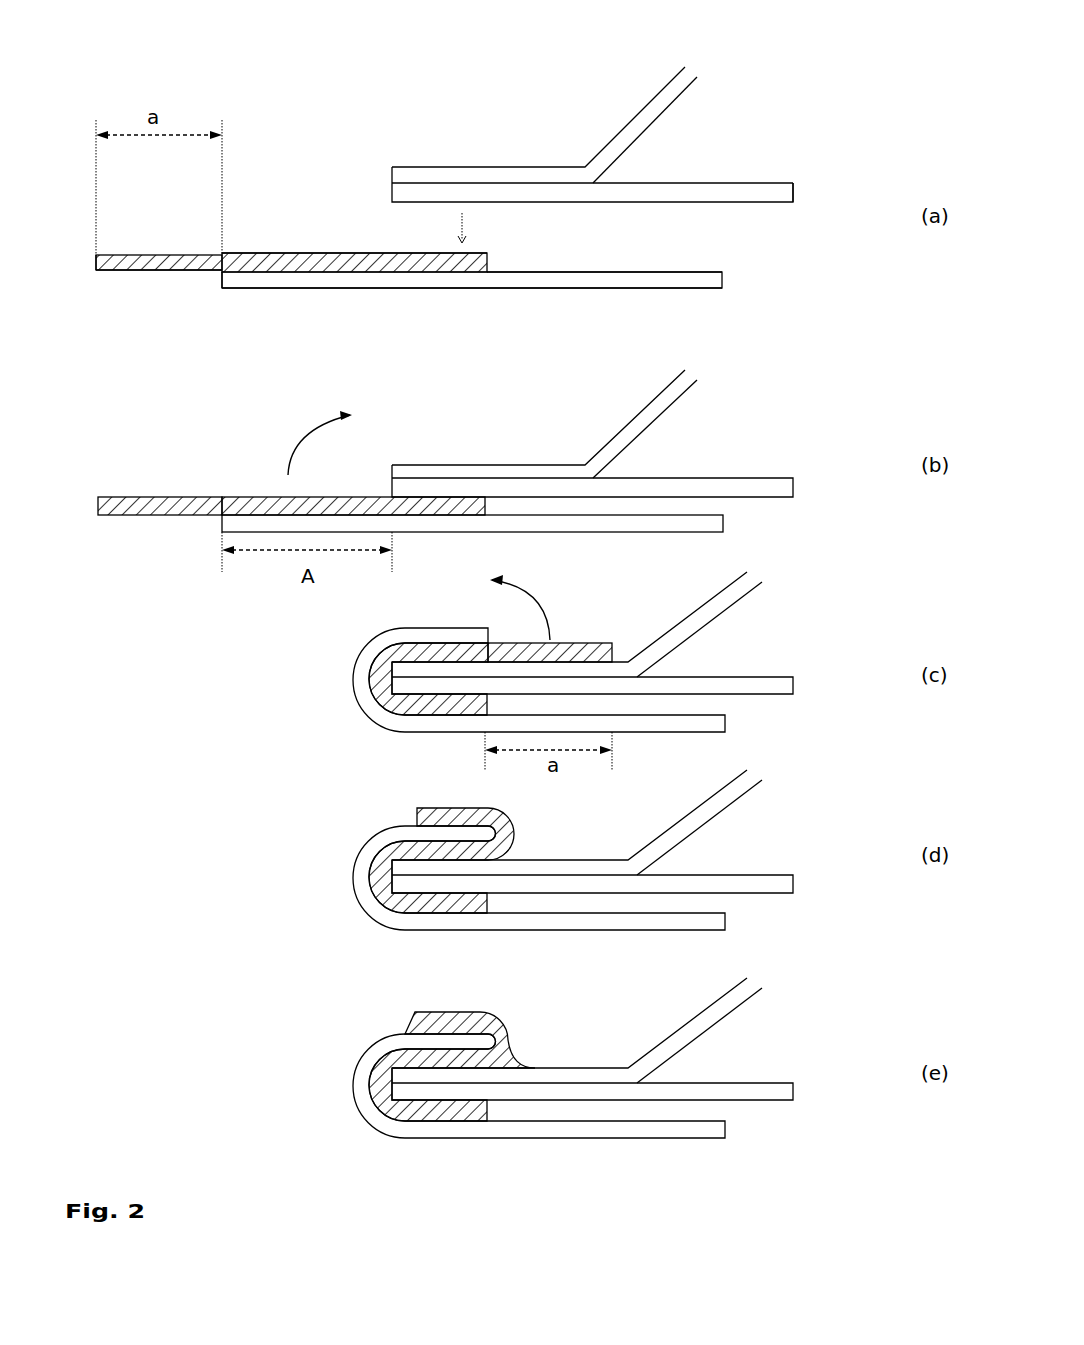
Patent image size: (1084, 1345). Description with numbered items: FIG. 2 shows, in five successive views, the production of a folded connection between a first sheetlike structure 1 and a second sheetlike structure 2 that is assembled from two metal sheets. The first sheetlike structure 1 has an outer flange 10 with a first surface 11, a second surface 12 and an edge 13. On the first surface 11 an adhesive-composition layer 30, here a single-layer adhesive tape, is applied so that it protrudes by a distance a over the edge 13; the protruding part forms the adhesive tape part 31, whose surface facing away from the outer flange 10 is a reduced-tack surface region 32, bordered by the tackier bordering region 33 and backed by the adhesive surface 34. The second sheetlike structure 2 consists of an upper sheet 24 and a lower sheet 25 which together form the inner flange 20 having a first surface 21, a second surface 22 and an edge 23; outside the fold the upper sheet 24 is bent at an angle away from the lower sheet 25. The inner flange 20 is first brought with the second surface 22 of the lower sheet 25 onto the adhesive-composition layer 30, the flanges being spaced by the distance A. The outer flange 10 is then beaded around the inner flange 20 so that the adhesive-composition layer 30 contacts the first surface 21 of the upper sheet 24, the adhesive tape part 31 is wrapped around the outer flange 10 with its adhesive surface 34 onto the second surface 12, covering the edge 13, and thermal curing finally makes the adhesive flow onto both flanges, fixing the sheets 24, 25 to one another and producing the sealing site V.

The first sheetlike structure 1 is at (437, 254).
The second sheetlike structure 2 is at (569, 131).
The outer flange 10 is at (292, 283).
The first surface 11 is at (557, 271).
The second surface 12 is at (568, 289).
The edge 13 is at (222, 289).
The inner flange 20 is at (569, 131).
The first surface 21 is at (468, 168).
The second surface 22 is at (473, 202).
The edge 23 is at (392, 182).
The upper sheet 24 is at (628, 133).
The lower sheet 25 is at (750, 192).
The adhesive-composition layer 30 is at (348, 255).
The adhesive tape part 31 is at (130, 263).
The reduced-tack surface region 32 is at (160, 255).
The bordering region 33 is at (290, 252).
The adhesive surface 34 is at (155, 268).
The sealing site V is at (505, 1048).